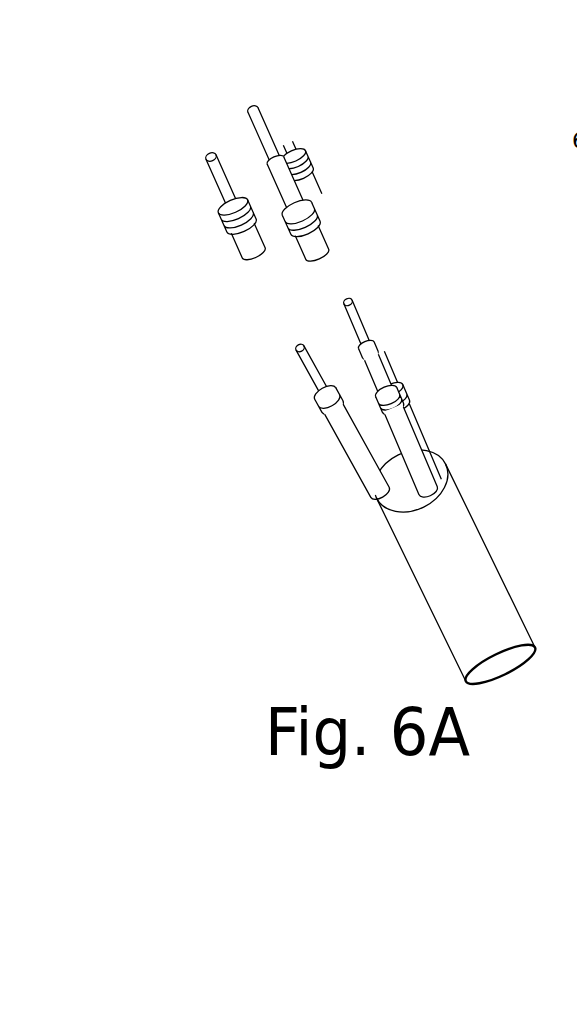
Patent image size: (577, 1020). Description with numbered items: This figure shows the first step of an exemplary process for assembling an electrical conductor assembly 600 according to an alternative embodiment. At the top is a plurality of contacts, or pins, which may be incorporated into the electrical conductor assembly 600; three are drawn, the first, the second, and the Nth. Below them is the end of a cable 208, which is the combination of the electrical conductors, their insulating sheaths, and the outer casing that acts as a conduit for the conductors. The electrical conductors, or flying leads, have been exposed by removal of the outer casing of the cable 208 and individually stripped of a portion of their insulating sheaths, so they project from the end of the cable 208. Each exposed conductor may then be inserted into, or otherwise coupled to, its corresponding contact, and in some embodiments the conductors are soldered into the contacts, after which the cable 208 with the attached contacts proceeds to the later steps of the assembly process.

The electrical conductor assembly 600 is at (434, 150).
The cable 208 is at (483, 545).